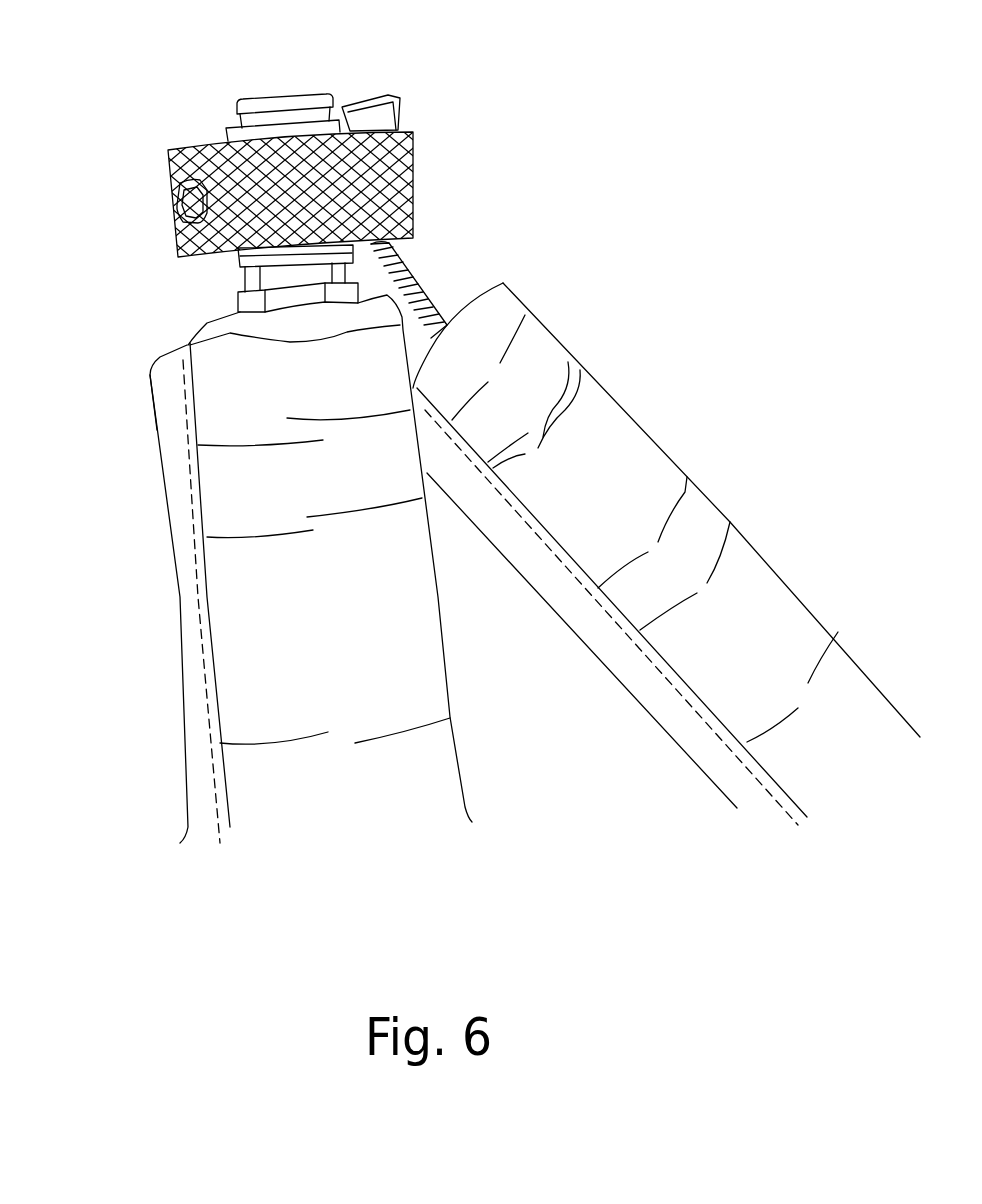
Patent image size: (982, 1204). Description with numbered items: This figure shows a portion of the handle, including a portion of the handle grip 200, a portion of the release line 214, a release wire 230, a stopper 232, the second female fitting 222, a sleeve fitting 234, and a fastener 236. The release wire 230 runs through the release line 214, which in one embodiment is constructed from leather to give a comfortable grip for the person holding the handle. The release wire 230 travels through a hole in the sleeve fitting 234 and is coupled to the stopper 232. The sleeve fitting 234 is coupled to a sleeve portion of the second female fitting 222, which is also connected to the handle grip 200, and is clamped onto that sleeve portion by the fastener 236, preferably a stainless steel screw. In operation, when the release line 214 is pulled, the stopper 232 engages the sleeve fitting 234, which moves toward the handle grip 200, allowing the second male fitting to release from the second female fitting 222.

The handle grip 200 is at (230, 612).
The release line 214 is at (707, 498).
The second female fitting 222 is at (237, 113).
The release wire 230 is at (412, 282).
The stopper 232 is at (398, 105).
The sleeve fitting 234 is at (410, 180).
The fastener 236 is at (197, 202).